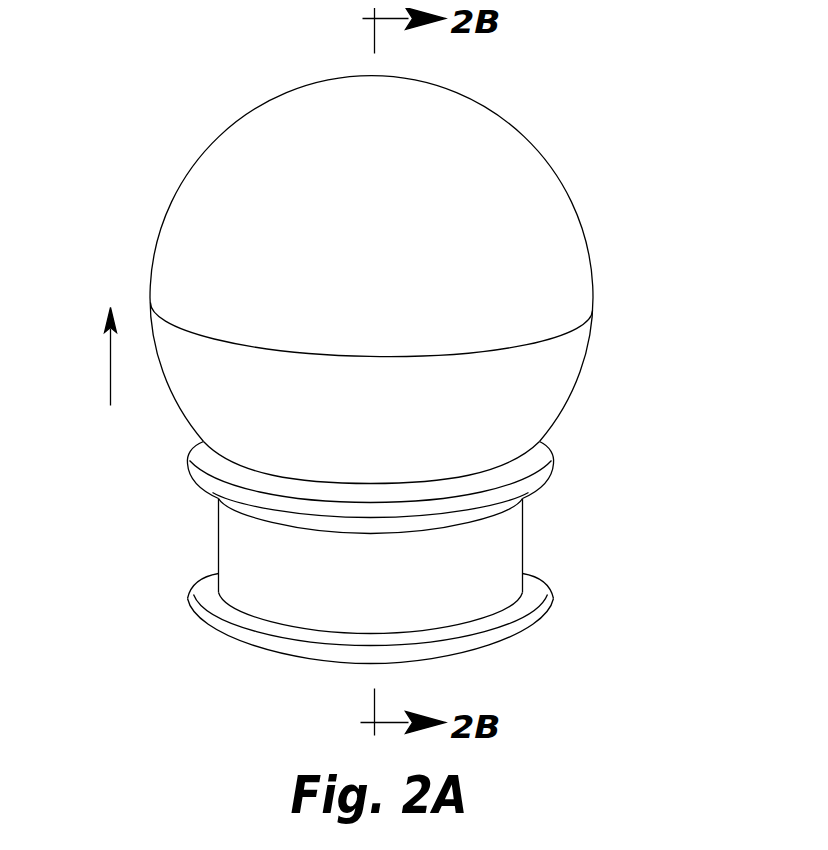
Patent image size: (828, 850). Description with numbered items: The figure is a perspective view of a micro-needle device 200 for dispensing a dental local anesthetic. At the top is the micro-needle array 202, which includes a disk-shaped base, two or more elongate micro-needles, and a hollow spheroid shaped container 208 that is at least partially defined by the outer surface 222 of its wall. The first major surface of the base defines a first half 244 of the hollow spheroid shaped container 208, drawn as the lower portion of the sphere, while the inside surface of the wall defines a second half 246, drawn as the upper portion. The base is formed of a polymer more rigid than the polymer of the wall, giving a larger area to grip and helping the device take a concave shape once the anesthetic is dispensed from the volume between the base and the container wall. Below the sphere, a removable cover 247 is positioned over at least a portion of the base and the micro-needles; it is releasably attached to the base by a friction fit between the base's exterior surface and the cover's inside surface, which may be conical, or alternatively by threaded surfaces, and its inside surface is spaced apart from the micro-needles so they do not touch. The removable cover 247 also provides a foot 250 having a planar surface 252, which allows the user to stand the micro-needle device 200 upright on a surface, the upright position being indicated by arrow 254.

The micro-needle device 200 is at (374, 395).
The micro-needle array 202 is at (442, 557).
The hollow spheroid shaped container 208 is at (378, 259).
The outer surface 222 is at (563, 222).
The first half 244 is at (403, 423).
The second half 246 is at (403, 243).
The removable cover 247 is at (507, 552).
The foot 250 is at (382, 644).
The planar surface 252 is at (300, 662).
The arrow 254 is at (110, 360).